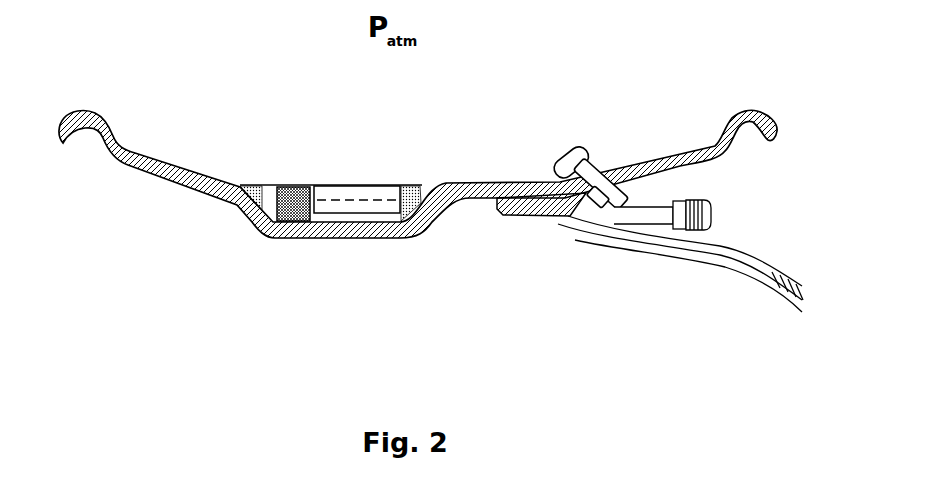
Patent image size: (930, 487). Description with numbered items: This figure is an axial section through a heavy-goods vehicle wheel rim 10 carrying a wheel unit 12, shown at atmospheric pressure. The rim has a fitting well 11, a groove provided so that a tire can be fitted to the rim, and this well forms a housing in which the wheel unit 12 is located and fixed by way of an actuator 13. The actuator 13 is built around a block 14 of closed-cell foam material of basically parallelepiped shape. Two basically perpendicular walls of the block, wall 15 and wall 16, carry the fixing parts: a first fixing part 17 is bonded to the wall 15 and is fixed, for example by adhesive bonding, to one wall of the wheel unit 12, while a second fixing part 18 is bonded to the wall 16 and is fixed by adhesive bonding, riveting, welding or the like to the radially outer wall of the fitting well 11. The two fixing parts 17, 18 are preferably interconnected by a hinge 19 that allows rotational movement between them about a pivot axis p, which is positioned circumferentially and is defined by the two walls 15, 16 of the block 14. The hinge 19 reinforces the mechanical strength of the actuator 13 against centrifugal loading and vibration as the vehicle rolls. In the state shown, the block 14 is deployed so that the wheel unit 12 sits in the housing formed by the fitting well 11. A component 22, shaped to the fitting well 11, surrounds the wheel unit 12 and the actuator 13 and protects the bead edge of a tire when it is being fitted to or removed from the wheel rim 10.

The wheel rim 10 is at (431, 169).
The fitting well 11 is at (413, 229).
The wheel unit 12 is at (373, 193).
The actuator 13 is at (332, 182).
The block 14 is at (305, 185).
The wall 15 is at (320, 222).
The wall 16 is at (268, 223).
The first fixing part 17 is at (310, 185).
The second fixing part 18 is at (288, 224).
The hinge 19 is at (312, 207).
The component 22 is at (263, 186).
The pivot axis p is at (302, 223).